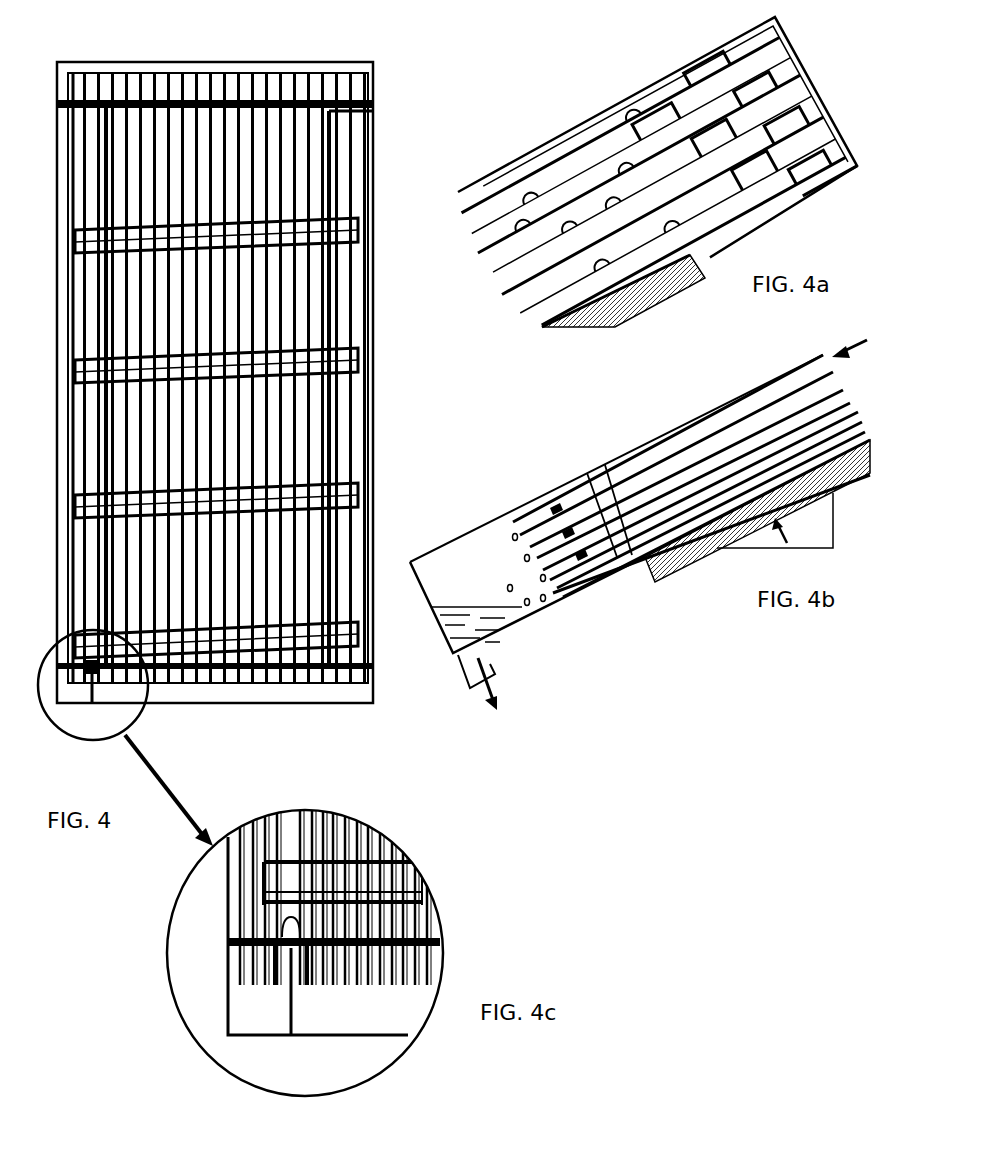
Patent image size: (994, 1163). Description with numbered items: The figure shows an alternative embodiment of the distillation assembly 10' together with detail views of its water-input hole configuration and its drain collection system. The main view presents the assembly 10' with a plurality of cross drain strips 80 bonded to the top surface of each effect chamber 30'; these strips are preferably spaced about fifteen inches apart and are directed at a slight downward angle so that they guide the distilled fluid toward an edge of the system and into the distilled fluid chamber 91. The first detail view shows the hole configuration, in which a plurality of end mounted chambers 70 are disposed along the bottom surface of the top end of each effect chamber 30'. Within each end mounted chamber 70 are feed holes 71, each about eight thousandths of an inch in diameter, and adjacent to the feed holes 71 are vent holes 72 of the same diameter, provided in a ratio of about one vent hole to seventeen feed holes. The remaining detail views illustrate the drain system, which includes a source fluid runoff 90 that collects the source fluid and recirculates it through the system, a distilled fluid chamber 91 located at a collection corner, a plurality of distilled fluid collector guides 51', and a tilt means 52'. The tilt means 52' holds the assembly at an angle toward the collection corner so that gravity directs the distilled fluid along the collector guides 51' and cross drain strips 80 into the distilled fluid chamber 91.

In FIG. 4, the assembly 10' is at (215, 361).
In FIG. 4, the distilled fluid collector guides 51' is at (187, 403).
In FIG. 4, the cross drain strips 80 is at (146, 236).
In FIG. 4B, the cross drain strips 80 is at (577, 473).
In FIG. 4A, the feed holes 71 is at (643, 113).
In FIG. 4A, the vent holes 72 is at (710, 82).
In FIG. 4A, the effect chamber 30' is at (792, 140).
In FIG. 4A, the end mounted chambers 70 is at (770, 223).
In FIG. 4B, the tilt means 52' is at (770, 511).
In FIG. 4C, the source fluid runoff 90 is at (387, 1010).
In FIG. 4C, the distilled fluid chamber 91 is at (253, 1003).